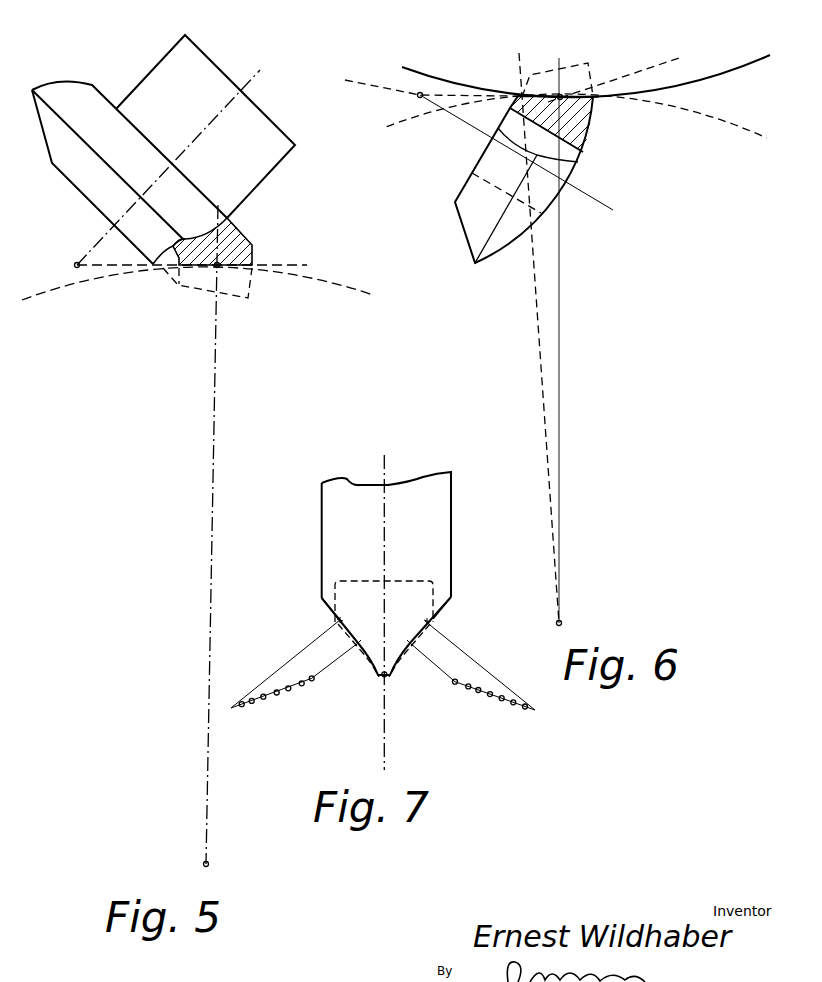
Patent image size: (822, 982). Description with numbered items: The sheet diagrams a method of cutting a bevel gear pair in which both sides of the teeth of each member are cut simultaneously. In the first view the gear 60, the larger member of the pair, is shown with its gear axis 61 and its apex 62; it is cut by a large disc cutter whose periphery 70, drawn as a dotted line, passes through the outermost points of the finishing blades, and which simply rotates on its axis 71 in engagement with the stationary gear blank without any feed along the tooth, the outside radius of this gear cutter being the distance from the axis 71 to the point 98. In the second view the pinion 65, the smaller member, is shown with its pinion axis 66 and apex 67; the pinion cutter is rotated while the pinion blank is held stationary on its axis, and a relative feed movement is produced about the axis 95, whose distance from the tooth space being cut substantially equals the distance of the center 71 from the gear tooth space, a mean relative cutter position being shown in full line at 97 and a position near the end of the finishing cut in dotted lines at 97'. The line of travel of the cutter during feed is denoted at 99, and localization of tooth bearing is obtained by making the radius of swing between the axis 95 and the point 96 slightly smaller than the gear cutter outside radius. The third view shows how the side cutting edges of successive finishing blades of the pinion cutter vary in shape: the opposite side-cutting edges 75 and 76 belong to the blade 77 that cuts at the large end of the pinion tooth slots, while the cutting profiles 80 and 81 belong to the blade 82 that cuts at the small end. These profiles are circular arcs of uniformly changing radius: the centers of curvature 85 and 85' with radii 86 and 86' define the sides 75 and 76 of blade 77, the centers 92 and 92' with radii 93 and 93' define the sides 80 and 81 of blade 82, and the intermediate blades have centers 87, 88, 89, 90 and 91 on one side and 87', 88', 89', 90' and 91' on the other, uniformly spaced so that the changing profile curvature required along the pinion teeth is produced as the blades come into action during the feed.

In FIG. 5, the gear 60 is at (90, 93).
In FIG. 5, the gear axis 61 is at (220, 113).
In FIG. 5, the gear apex 62 is at (76, 262).
In FIG. 5, the periphery of the gear cutter 70 is at (325, 280).
In FIG. 5, the axis of the gear cutter 71 is at (209, 866).
In FIG. 5, the point on gear cutter outside radius 98 is at (218, 267).
In FIG. 6, the pinion 65 is at (497, 243).
In FIG. 6, the pinion axis 66 is at (595, 197).
In FIG. 6, the pinion apex 67 is at (418, 97).
In FIG. 6, the feed axis 95 is at (562, 623).
In FIG. 6, the point defining radius of swing 96 is at (560, 94).
In FIG. 6, the mean relative cutter position 97 is at (586, 79).
In FIG. 6, the cutter position near end of finishing cut 97' is at (615, 68).
In FIG. 6, the line of travel of the cutter 99 is at (703, 117).
In FIG. 7, the side-cutting edge 75 is at (323, 603).
In FIG. 7, the side-cutting edge 76 is at (448, 603).
In FIG. 7, the blade for large end 77 is at (442, 527).
In FIG. 7, the cutting profile 80 is at (341, 623).
In FIG. 7, the cutting profile 81 is at (427, 623).
In FIG. 7, the blade for small end 82 is at (412, 582).
In FIG. 7, the center of curvature 85 is at (229, 717).
In FIG. 7, the center of curvature 85' is at (543, 726).
In FIG. 7, the radius 86 is at (285, 664).
In FIG. 7, the radius 86' is at (480, 665).
In FIG. 7, the center of curvature 87 is at (243, 722).
In FIG. 7, the center of curvature 87' is at (519, 718).
In FIG. 7, the center of curvature 88 is at (271, 716).
In FIG. 7, the center of curvature 88' is at (497, 725).
In FIG. 7, the center of curvature 89 is at (294, 712).
In FIG. 7, the center of curvature 89' is at (491, 714).
In FIG. 7, the center of curvature 90 is at (304, 701).
In FIG. 7, the center of curvature 90' is at (479, 704).
In FIG. 7, the center of curvature 91 is at (304, 671).
In FIG. 7, the center of curvature 91' is at (456, 712).
In FIG. 7, the center of curvature 92 is at (329, 693).
In FIG. 7, the center of curvature 92' is at (449, 695).
In FIG. 7, the radius 93 is at (298, 674).
In FIG. 7, the radius 93' is at (469, 675).